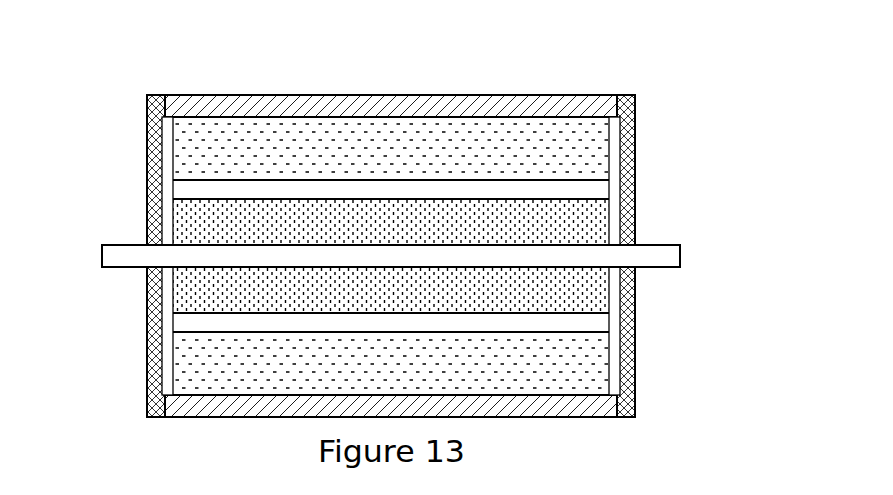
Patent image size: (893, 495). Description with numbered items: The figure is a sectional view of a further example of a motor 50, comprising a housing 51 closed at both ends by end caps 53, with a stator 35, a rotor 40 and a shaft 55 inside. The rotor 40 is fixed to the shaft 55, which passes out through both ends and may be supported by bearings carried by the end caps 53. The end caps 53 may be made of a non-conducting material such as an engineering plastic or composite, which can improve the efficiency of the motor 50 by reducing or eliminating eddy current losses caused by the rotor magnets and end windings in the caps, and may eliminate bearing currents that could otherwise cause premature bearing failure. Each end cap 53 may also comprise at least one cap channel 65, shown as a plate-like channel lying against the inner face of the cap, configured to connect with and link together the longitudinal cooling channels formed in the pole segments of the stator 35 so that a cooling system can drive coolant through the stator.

The motor 50 is at (108, 190).
The housing 51 is at (517, 95).
The end caps 53 is at (147, 382).
The cap channel 65 is at (167, 152).
The stator 35 is at (595, 150).
The rotor 40 is at (595, 292).
The shaft 55 is at (652, 245).